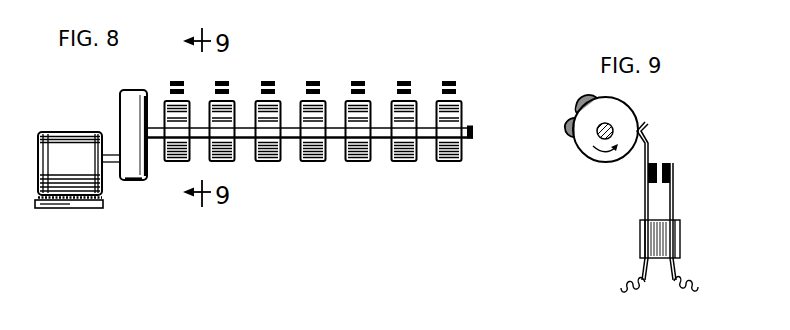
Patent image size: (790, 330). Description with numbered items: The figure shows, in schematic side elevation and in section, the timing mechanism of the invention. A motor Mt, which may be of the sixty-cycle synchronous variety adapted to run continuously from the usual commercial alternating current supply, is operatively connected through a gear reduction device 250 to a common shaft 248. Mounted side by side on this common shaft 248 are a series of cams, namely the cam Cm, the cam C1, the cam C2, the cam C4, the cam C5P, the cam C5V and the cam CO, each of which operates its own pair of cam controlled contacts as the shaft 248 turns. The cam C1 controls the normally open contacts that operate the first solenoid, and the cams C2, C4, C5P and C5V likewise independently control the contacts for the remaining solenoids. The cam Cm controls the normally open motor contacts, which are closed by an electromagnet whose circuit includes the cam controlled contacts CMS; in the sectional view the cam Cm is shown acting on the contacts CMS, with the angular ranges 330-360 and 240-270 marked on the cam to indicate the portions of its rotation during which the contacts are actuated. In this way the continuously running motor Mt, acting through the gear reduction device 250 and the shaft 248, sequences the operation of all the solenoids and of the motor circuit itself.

In FIG. 8, the gear reduction device 250 is at (129, 93).
In FIG. 8, the common shaft 248 is at (468, 130).
In FIG. 8, the motor Mt is at (77, 170).
In FIG. 8, the cam Cm is at (177, 142).
In FIG. 9, the cam Cm is at (605, 162).
In FIG. 8, the contacts cms CMS is at (170, 77).
In FIG. 9, the contacts cms CMS is at (663, 207).
In FIG. 8, the cam C1 is at (226, 122).
In FIG. 8, the cam C2 is at (268, 122).
In FIG. 8, the cam C4 is at (313, 122).
In FIG. 8, the cam C5p C5P is at (358, 122).
In FIG. 8, the cam C5v C5V is at (403, 122).
In FIG. 8, the cam Co CO is at (449, 122).
In FIG. 9, the cam lobe 330-360 degrees 330-360 is at (574, 104).
In FIG. 9, the cam lobe 240-270 degrees 240-270 is at (563, 129).